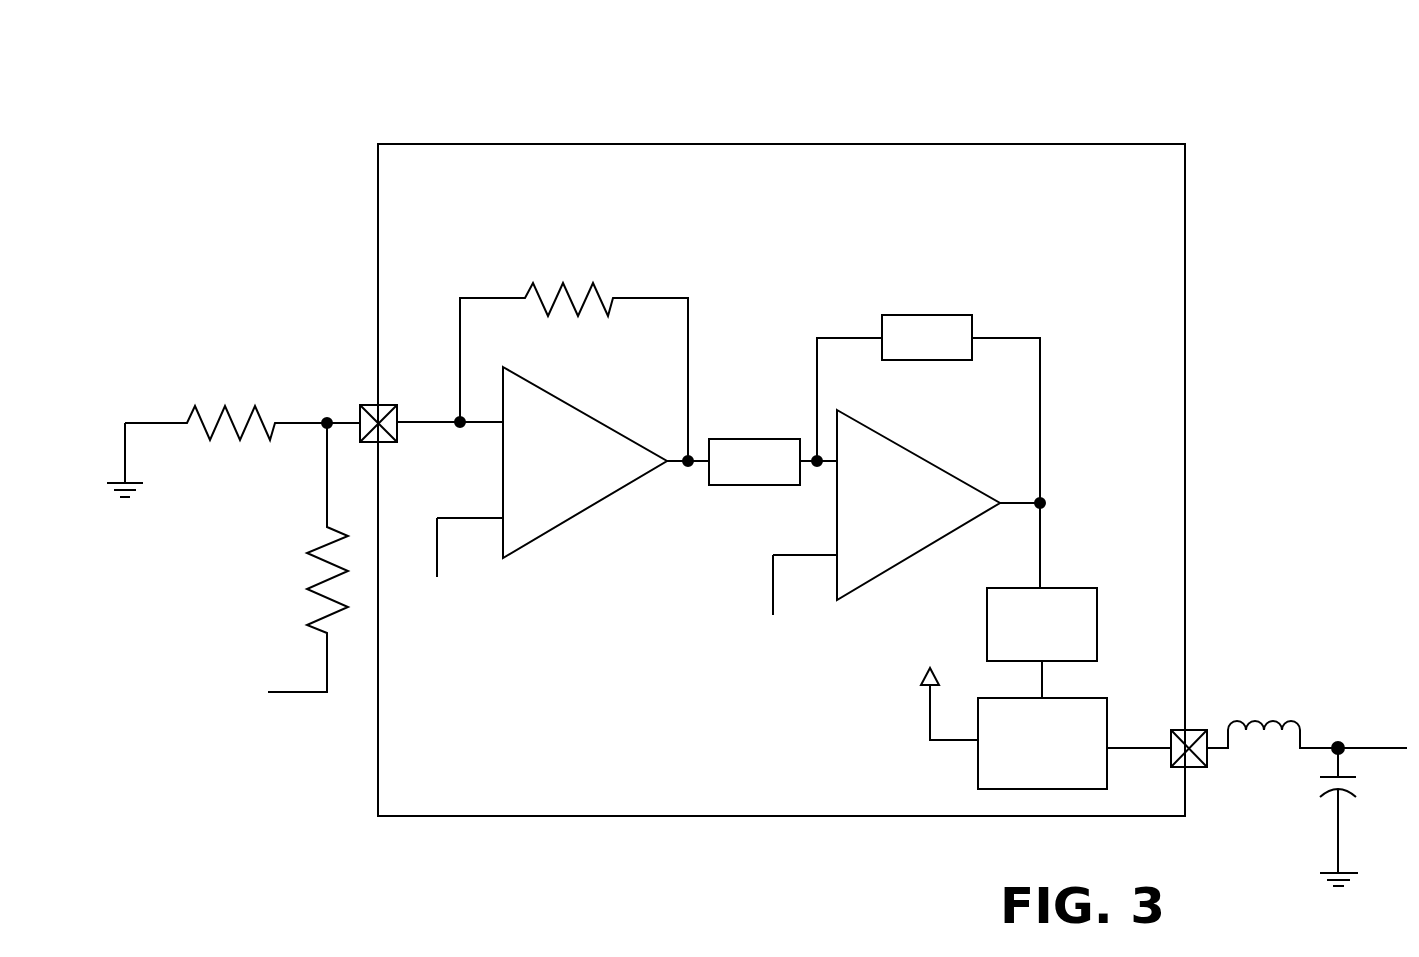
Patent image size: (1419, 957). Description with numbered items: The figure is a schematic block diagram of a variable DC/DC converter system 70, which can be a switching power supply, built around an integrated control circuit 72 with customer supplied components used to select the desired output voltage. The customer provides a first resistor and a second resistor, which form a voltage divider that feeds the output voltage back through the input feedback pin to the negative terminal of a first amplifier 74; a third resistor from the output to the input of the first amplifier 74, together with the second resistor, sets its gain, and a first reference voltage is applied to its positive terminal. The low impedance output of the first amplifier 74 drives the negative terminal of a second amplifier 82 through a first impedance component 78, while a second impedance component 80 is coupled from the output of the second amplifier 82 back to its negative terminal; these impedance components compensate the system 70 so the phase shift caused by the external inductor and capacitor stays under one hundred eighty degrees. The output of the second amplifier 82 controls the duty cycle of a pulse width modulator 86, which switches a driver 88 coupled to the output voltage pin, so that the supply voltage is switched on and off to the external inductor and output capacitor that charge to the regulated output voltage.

The variable DC/DC converter system 70 is at (1214, 93).
The integrated control circuit 72 is at (913, 144).
The first amplifier 74 is at (567, 400).
The first impedance component 78 is at (740, 438).
The second impedance component 80 is at (923, 315).
The second amplifier 82 is at (887, 437).
The pulse width modulator 86 is at (1057, 588).
The driver 88 is at (1057, 698).